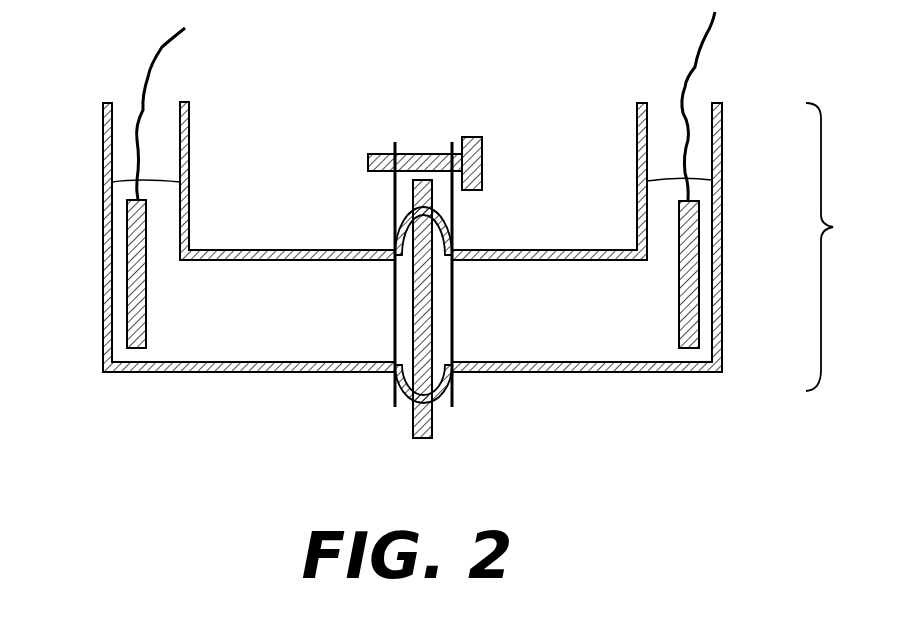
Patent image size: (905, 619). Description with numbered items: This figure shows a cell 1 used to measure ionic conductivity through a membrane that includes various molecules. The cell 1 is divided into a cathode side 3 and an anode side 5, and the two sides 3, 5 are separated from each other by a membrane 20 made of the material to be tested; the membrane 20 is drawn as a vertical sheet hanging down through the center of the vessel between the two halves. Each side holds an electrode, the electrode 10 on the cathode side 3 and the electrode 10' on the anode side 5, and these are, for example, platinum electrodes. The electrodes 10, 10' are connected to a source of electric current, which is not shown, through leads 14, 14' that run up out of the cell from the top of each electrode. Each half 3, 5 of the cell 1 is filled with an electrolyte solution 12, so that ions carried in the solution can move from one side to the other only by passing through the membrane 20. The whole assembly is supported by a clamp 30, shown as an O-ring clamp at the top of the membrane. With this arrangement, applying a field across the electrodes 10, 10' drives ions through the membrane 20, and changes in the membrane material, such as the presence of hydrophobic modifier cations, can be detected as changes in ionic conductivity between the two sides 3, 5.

The cell 1 is at (827, 247).
The cathode side 3 is at (282, 372).
The anode side 5 is at (600, 372).
The electrode 10 is at (108, 348).
The electrode 10' is at (741, 336).
The electrolyte solution 12 is at (312, 320).
The lead 14 is at (142, 112).
The lead 14' is at (724, 106).
The membrane 20 is at (405, 286).
The clamp 30 is at (423, 138).